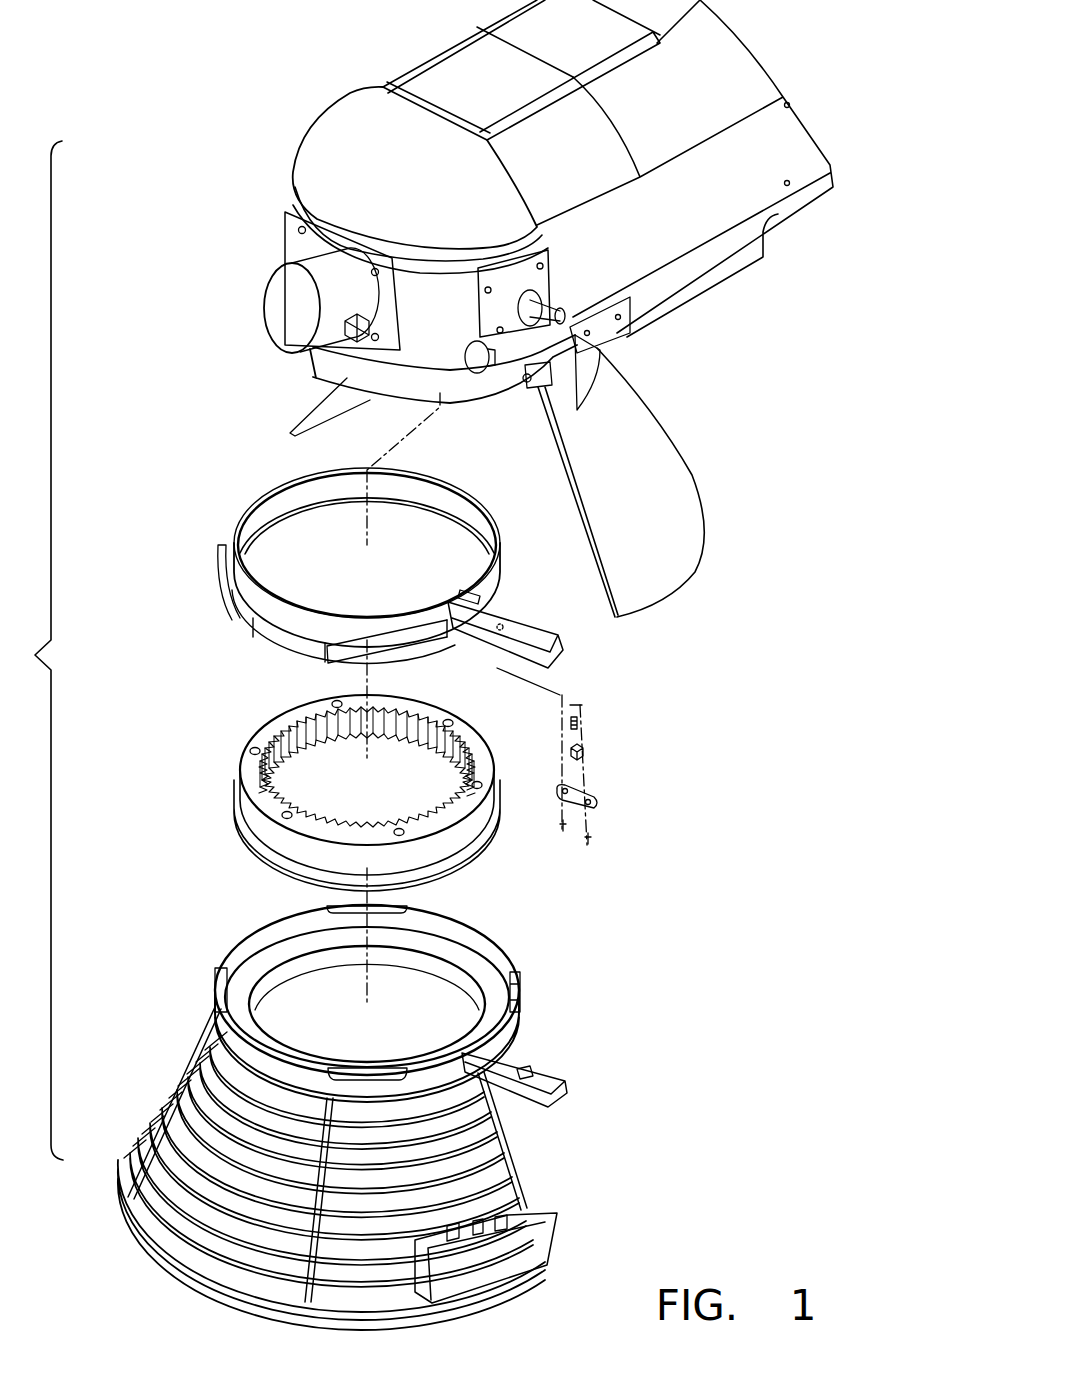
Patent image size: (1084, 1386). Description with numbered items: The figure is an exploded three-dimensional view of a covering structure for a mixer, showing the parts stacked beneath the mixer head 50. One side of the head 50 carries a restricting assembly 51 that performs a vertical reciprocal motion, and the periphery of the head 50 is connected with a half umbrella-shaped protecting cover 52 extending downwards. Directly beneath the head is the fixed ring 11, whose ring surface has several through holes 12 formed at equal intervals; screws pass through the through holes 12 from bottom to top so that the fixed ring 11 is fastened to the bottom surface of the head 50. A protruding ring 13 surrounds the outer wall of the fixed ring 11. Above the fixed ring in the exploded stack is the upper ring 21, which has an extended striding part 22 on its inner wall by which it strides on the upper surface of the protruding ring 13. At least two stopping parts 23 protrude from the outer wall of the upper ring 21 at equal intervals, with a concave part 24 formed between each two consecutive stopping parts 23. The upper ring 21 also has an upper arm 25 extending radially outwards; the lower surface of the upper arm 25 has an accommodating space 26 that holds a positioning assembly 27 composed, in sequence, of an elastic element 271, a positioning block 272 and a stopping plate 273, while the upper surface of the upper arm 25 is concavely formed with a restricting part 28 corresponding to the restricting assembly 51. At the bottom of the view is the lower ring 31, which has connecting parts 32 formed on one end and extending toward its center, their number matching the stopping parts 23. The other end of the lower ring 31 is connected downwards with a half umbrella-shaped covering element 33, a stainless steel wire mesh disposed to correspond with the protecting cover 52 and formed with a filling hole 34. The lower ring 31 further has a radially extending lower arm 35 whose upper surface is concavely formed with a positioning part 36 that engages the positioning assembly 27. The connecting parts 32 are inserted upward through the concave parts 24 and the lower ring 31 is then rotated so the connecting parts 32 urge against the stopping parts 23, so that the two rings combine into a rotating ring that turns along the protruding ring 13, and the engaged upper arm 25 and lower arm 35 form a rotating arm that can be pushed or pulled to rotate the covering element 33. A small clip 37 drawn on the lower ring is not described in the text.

The fixed ring 11 is at (358, 782).
The through holes 12 is at (330, 703).
The protruding ring 13 is at (245, 840).
The upper ring 21 is at (349, 582).
The striding part 22 is at (300, 512).
The stopping parts 23 is at (217, 565).
The concave part 24 is at (258, 640).
The upper arm 25 is at (523, 607).
The accommodating space 26 is at (500, 627).
The positioning assembly 27 is at (647, 770).
The elastic element 271 is at (580, 722).
The positioning block 272 is at (583, 752).
The stopping plate 273 is at (624, 814).
The restricting part 28 is at (466, 592).
The lower ring 31 is at (350, 1117).
The connecting parts 32 is at (224, 987).
The covering element 33 is at (155, 1083).
The filling hole 34 is at (540, 1213).
The lower arm 35 is at (535, 1090).
The positioning part 36 is at (530, 1072).
The clip 37 is at (519, 975).
The head 50 is at (327, 362).
The restricting assembly 51 is at (535, 392).
The protecting cover 52 is at (653, 427).